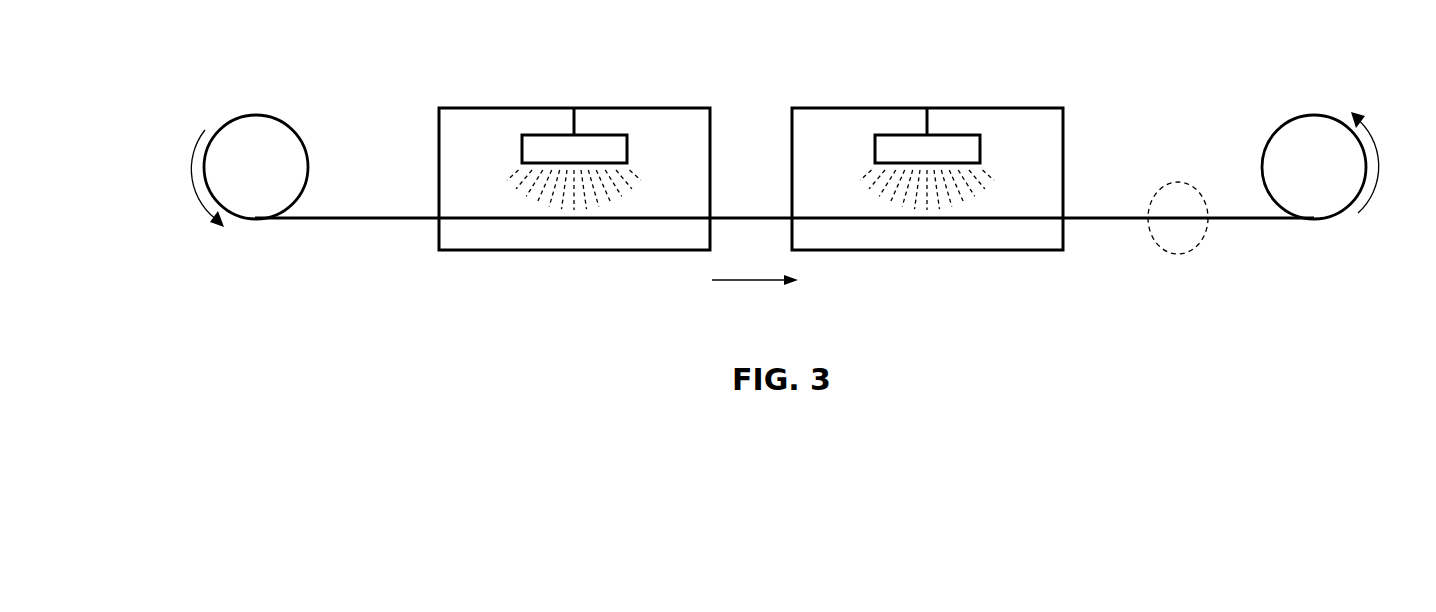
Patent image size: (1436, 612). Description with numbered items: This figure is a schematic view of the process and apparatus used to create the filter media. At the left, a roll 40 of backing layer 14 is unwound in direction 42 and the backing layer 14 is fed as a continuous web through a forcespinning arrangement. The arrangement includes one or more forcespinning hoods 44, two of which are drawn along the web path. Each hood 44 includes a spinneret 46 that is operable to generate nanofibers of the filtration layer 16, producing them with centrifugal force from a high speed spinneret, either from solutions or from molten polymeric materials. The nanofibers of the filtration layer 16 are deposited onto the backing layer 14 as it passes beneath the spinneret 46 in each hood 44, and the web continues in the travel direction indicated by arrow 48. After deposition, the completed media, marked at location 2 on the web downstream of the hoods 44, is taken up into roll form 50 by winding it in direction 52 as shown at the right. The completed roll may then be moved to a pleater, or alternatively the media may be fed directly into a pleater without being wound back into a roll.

The article / product 2 is at (1178, 254).
The backing layer 14 is at (358, 244).
The filtration layer 16 is at (630, 180).
The roll 40 is at (293, 125).
The unwinding direction 42 is at (195, 190).
The forcespinning hood 44 is at (464, 108).
The spray nozzle / applicator 46 is at (540, 135).
The web travel direction 48 is at (764, 283).
The rewind roller 50 is at (1283, 127).
The winding direction 52 is at (1363, 197).